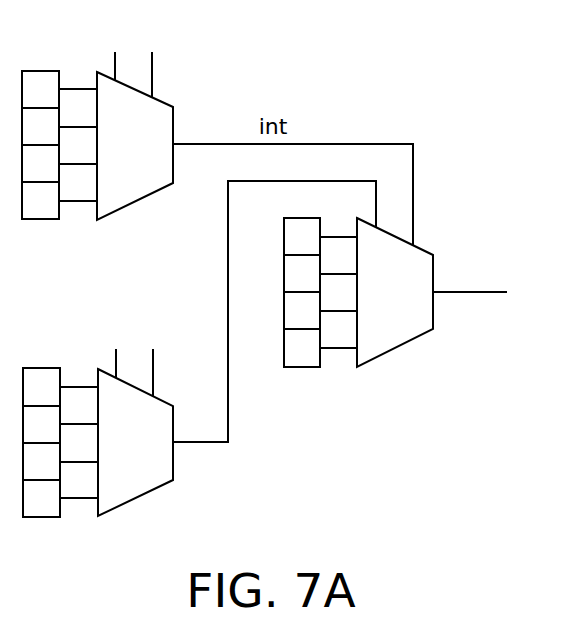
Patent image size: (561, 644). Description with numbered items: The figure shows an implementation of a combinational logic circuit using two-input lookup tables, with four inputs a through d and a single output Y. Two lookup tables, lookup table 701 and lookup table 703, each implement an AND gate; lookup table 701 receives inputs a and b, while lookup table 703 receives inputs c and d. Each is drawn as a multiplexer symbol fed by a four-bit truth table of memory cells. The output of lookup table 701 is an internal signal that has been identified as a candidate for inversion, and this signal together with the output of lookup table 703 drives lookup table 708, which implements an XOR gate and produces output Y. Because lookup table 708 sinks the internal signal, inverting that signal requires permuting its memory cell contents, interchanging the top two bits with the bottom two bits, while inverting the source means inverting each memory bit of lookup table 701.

The 2-LUT 701 is at (156, 156).
The 2-LUT 703 is at (157, 453).
The 2-LUT 708 is at (416, 304).